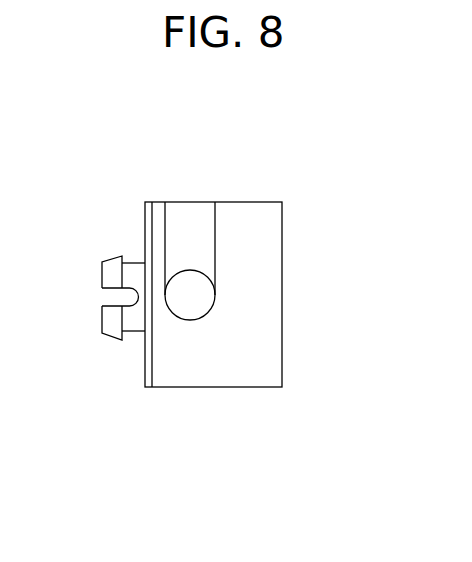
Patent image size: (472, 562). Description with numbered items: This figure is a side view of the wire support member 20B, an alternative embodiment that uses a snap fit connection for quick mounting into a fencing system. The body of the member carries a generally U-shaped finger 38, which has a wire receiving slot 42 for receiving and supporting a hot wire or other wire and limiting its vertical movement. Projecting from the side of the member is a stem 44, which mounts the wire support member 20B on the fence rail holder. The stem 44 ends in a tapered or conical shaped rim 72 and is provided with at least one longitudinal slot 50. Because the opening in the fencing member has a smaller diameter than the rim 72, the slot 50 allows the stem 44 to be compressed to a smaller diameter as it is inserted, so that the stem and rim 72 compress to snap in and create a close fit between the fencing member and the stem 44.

The wire support member 20B is at (254, 147).
The finger 38 is at (262, 242).
The wire receiving slot 42 is at (215, 302).
The stem 44 is at (135, 262).
The longitudinal slot 50 is at (133, 307).
The rim 72 is at (110, 333).